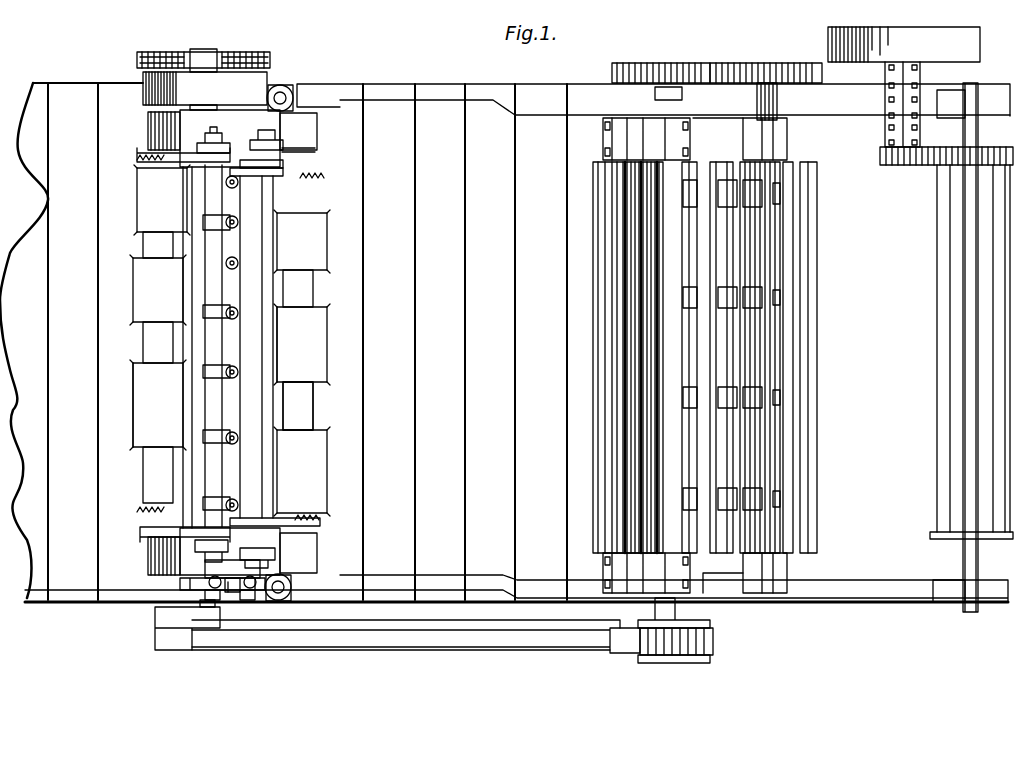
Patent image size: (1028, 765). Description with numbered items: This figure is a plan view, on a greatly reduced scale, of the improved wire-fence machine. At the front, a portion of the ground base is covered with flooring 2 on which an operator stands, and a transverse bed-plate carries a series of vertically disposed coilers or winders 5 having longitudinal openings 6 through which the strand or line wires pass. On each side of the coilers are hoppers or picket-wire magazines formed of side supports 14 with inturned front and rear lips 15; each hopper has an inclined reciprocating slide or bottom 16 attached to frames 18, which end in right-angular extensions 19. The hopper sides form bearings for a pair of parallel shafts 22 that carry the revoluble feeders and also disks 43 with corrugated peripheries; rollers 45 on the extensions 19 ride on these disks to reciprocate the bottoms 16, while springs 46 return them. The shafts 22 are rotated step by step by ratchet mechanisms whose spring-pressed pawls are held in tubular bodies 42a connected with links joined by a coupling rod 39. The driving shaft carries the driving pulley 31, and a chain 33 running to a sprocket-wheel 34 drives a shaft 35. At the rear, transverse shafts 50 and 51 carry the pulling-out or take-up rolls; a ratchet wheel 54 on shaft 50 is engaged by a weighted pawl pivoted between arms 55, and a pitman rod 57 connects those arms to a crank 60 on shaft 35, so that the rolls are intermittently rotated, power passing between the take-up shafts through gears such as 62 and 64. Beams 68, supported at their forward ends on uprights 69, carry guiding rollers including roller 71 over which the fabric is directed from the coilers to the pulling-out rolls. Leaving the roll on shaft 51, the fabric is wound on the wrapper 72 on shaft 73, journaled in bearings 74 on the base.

The flooring 2 is at (675, 342).
The coilers or winders 5 is at (232, 188).
The longitudinal openings 6 is at (226, 265).
The side supports 14 is at (170, 362).
The inturned front and rear lips 15 is at (135, 442).
The inclined reciprocal slides or bottoms 16 is at (230, 340).
The frames 18 is at (145, 460).
The right-angular extensions 19 is at (180, 156).
The shafts 22 is at (210, 413).
The driving pulley 31 is at (205, 91).
The chain 33 is at (228, 53).
The sprocket-wheel 34 is at (270, 58).
The shaft 35 is at (202, 606).
The coupling rod 39 is at (222, 579).
The tubular bodies 42a is at (245, 594).
The disks 43 is at (218, 146).
The rollers 45 is at (283, 156).
The springs 46 is at (148, 163).
The transverse shaft 50 is at (668, 97).
The transverse shaft 51 is at (774, 100).
The ratchet wheel 54 is at (700, 644).
The arms 55 is at (690, 626).
The pitman bar or rod 57 is at (467, 640).
The crank 60 is at (170, 617).
The gear 62 is at (656, 66).
The gear 64 is at (753, 72).
The beams 68 is at (447, 100).
The frame parts or uprights 69 is at (292, 88).
The guiding roller 71 is at (637, 380).
The wrapper 72 is at (945, 243).
The shaft 73 is at (975, 85).
The bearings 74 is at (949, 346).